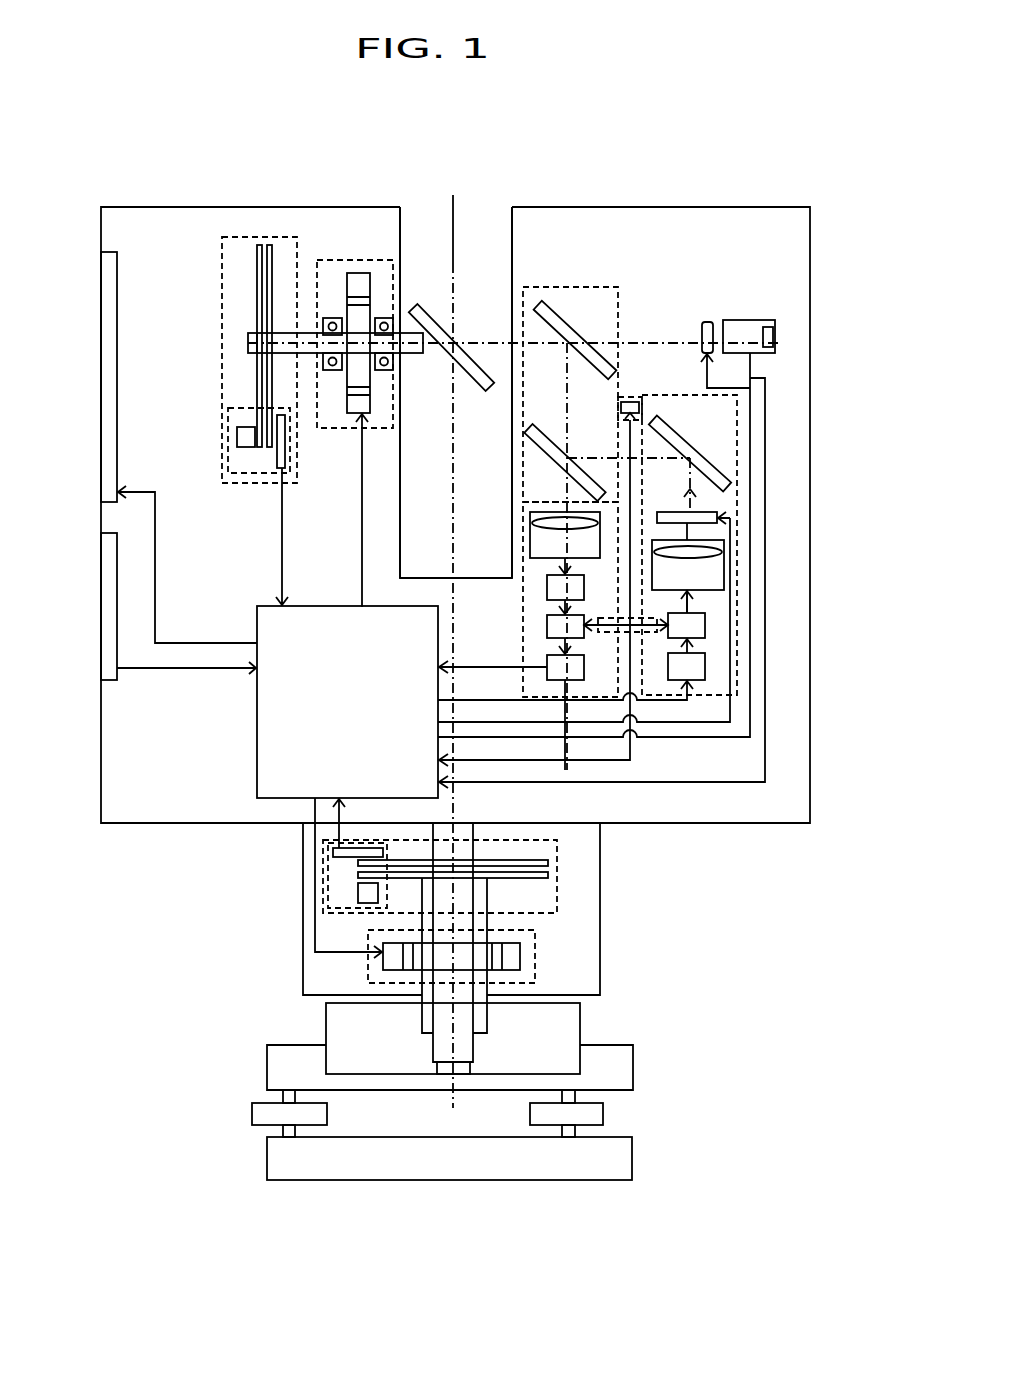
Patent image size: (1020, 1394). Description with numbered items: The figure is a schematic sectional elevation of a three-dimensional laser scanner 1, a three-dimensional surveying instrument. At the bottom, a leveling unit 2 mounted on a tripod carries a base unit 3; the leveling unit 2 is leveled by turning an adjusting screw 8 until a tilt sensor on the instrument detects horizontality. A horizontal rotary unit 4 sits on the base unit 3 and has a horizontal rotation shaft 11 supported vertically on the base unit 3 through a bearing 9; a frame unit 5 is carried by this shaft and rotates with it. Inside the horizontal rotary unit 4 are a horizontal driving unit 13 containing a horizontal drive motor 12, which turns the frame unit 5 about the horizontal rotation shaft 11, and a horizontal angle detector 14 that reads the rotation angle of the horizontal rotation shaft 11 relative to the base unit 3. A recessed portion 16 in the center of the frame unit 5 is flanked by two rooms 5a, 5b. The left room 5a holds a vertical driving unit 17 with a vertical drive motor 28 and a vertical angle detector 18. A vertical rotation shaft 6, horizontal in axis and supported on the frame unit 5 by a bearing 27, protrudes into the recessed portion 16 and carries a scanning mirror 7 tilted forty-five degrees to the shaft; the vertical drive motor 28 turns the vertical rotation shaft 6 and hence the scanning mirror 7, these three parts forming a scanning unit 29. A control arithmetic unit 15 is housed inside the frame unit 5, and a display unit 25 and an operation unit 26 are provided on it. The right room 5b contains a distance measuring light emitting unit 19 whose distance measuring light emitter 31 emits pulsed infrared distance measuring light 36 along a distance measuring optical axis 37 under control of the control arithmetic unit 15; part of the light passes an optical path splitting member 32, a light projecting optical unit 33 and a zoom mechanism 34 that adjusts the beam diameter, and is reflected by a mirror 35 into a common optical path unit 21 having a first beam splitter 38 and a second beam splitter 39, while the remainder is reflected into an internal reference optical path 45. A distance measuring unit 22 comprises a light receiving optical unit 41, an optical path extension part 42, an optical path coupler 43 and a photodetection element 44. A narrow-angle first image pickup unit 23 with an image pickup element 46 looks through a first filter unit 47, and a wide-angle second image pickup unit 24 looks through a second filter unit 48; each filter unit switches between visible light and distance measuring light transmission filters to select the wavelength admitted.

The three-dimensional laser scanner 1 is at (190, 146).
The leveling unit 2 is at (231, 1092).
The base unit 3 is at (633, 1067).
The horizontal rotary unit 4 is at (600, 903).
The frame unit 5 is at (206, 823).
The room 5a is at (168, 251).
The room 5b is at (783, 254).
The vertical rotation shaft 6 is at (423, 353).
The scanning mirror 7 is at (418, 307).
The adjusting screw 8 is at (603, 1113).
The bearing 9 is at (487, 1025).
The horizontal rotation shaft 11 is at (433, 1017).
The horizontal drive motor 12 is at (520, 952).
The horizontal driving unit 13 is at (535, 963).
The horizontal angle detector 14 is at (557, 875).
The control arithmetic unit 15 is at (257, 750).
The recessed portion 16 is at (447, 449).
The vertical driving unit 17 is at (337, 258).
The vertical angle detector 18 is at (223, 315).
The distance measuring light emitting unit 19 is at (737, 613).
The common optical path unit 21 is at (537, 287).
The distance measuring unit 22 is at (528, 540).
The first image pickup unit 23 is at (738, 319).
The second image pickup unit 24 is at (637, 397).
The display unit 25 is at (101, 310).
The operation unit 26 is at (101, 585).
The bearing 27 is at (335, 372).
The vertical drive motor 28 is at (357, 273).
The scanning unit 29 is at (428, 196).
The distance measuring light emitter 31 is at (705, 670).
The optical path splitting member 32 is at (705, 627).
The light projecting optical unit 33 is at (724, 556).
The zoom mechanism 34 is at (667, 511).
The mirror 35 is at (684, 445).
The distance measuring light 36 is at (690, 572).
The distance measuring optical axis 37 is at (456, 268).
The first beam splitter 38 is at (548, 428).
The second beam splitter 39 is at (567, 320).
The light receiving optical unit 41 is at (528, 512).
The optical path extension part 42 is at (546, 588).
The optical path coupler 43 is at (546, 628).
The photodetection element 44 is at (546, 672).
The internal reference optical path 45 is at (610, 632).
The image pickup element 46 is at (765, 327).
The first filter unit 47 is at (707, 320).
The second filter unit 48 is at (620, 407).